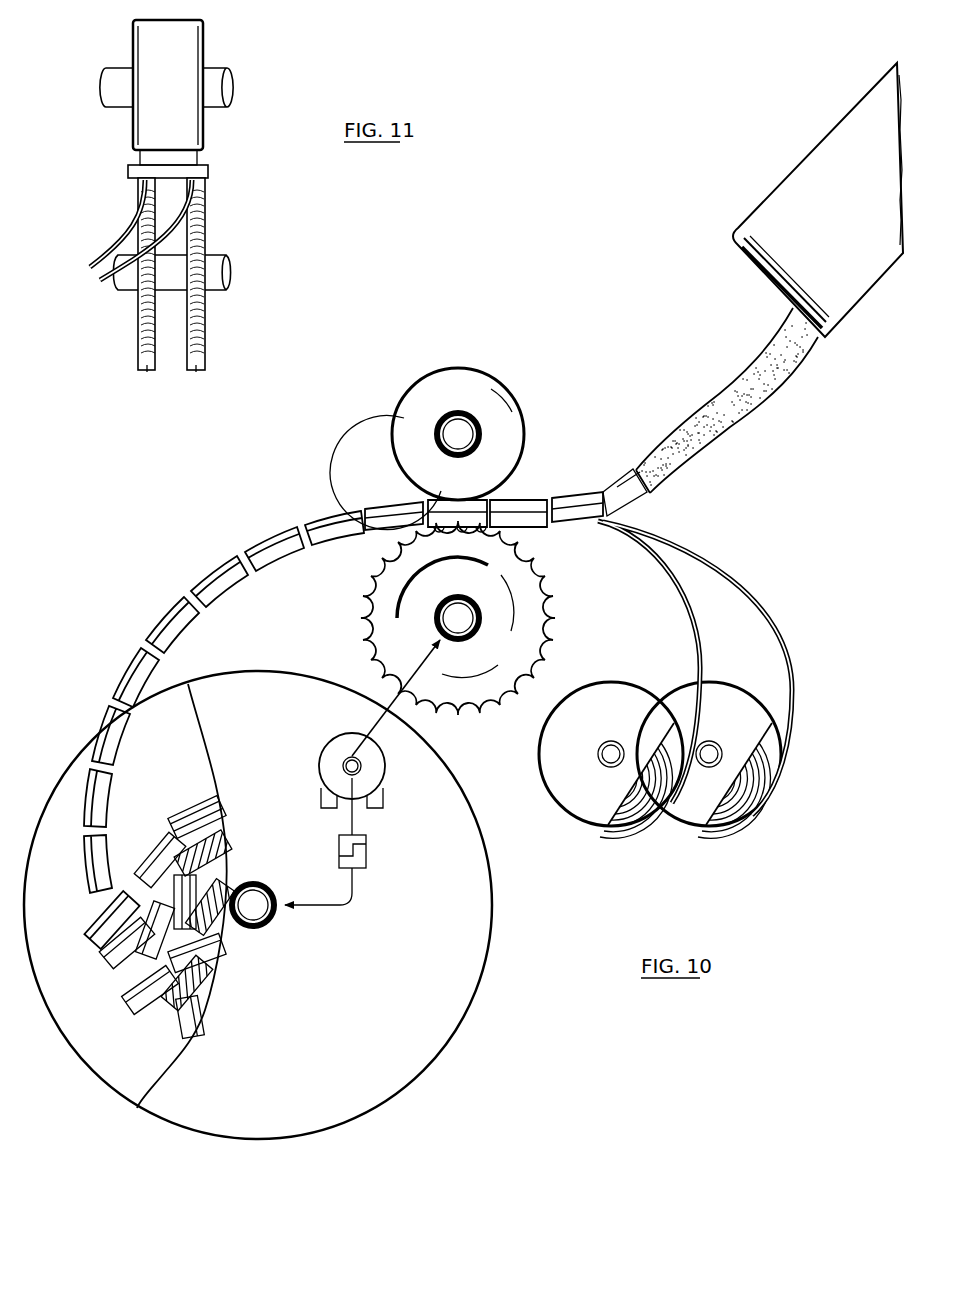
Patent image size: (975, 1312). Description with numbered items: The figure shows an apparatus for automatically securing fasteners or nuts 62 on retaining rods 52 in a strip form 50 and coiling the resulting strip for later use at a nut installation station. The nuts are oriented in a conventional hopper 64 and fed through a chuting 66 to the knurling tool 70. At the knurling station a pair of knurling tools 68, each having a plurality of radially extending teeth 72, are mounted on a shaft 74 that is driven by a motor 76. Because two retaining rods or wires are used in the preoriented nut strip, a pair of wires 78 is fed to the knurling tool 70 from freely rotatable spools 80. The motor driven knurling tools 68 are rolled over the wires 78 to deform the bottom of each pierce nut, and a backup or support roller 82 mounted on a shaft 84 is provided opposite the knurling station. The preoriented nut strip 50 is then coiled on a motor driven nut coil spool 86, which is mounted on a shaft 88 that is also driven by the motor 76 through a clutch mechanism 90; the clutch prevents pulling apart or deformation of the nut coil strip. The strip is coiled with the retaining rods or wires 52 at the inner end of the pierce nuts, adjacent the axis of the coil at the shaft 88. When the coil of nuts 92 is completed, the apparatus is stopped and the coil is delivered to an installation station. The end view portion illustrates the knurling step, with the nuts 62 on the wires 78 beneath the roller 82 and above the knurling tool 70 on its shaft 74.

In FIG. 10, the nut strip 50 is at (298, 517).
In FIG. 10, the retaining rods 52 is at (102, 833).
In FIG. 11, the nuts 62 is at (185, 166).
In FIG. 10, the nuts 62 is at (530, 498).
In FIG. 10, the feed hopper plate 64 is at (845, 226).
In FIG. 10, the chuting 66 is at (760, 408).
In FIG. 11, the knurling tools 68 is at (149, 372).
In FIG. 10, the knurling tools 68 is at (540, 657).
In FIG. 11, the knurling tool 70 is at (208, 332).
In FIG. 10, the knurling tool 70 is at (350, 623).
In FIG. 10, the radially extending teeth 72 is at (548, 622).
In FIG. 11, the shaft 74 is at (222, 276).
In FIG. 10, the shaft 74 is at (462, 610).
In FIG. 10, the motor 76 is at (376, 777).
In FIG. 11, the wires 78 is at (134, 241).
In FIG. 10, the wires 78 is at (702, 630).
In FIG. 10, the spools 80 is at (590, 816).
In FIG. 11, the backup roller 82 is at (190, 33).
In FIG. 10, the backup roller 82 is at (524, 444).
In FIG. 11, the shaft 84 is at (230, 88).
In FIG. 10, the shaft 84 is at (466, 428).
In FIG. 10, the nut coil spool 86 is at (443, 1013).
In FIG. 10, the shaft 88 is at (258, 914).
In FIG. 10, the clutch mechanism 90 is at (369, 855).
In FIG. 10, the coil of nuts 92 is at (192, 807).